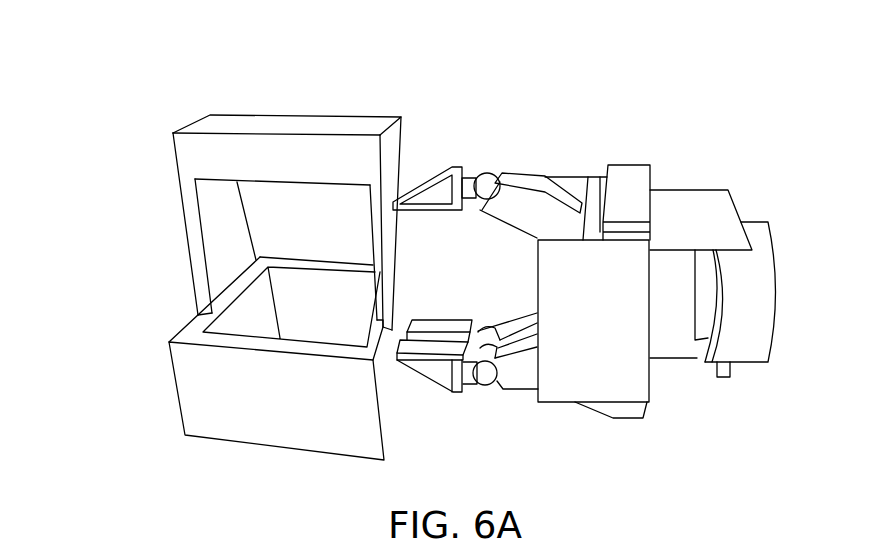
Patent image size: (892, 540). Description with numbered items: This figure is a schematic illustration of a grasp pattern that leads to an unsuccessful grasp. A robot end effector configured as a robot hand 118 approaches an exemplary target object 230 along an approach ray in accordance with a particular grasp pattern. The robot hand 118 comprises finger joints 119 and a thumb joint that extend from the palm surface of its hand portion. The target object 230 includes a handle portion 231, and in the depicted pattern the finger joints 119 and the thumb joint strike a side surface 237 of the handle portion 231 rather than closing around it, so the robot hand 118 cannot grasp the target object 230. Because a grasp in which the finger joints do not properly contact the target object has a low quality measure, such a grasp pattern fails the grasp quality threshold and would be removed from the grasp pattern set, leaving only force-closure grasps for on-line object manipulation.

The target object 230 is at (265, 238).
The handle portion 231 is at (167, 158).
The side surface 237 is at (399, 131).
The finger joints 119 is at (453, 392).
The robot hand 118 is at (666, 386).